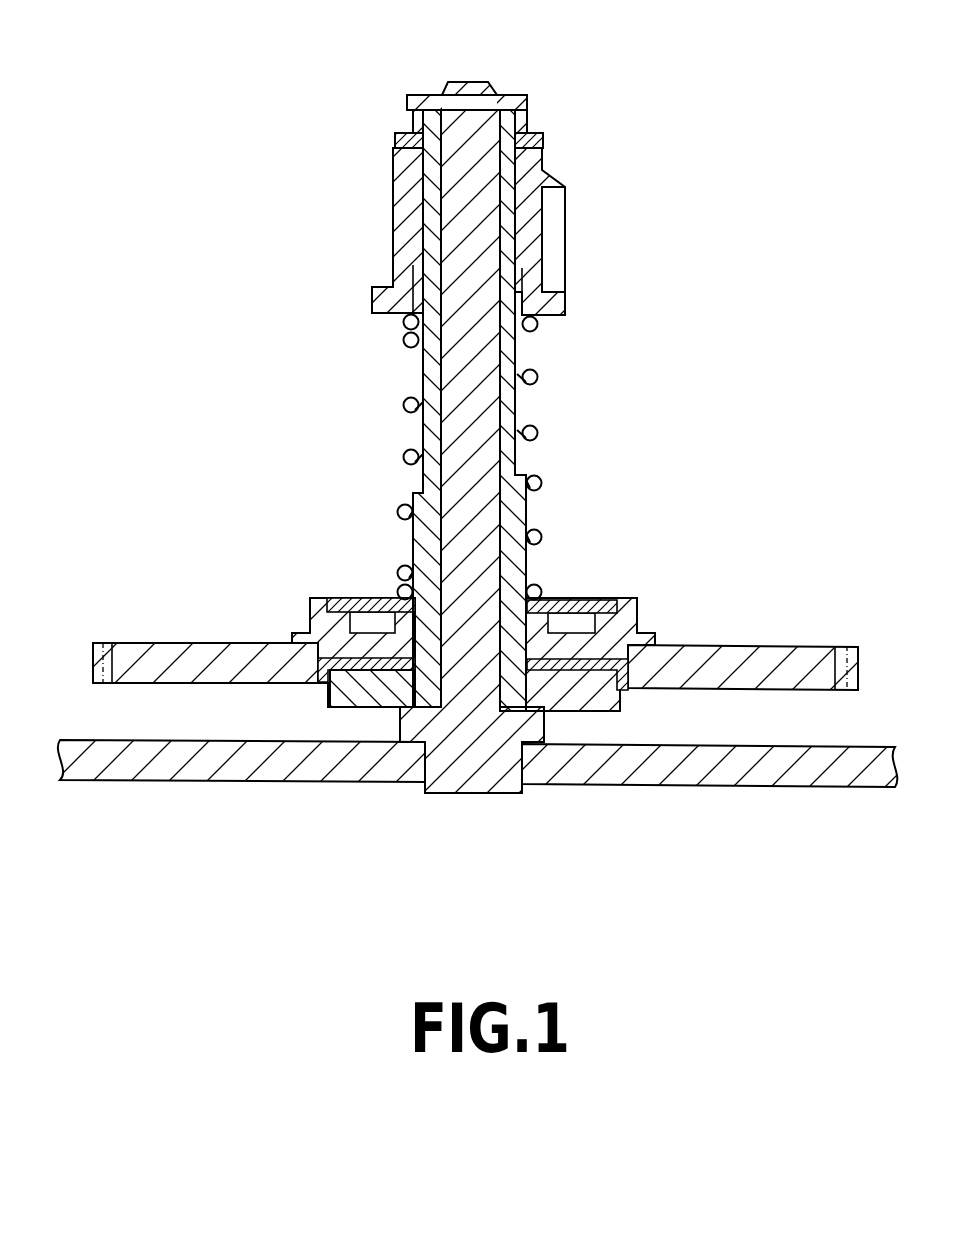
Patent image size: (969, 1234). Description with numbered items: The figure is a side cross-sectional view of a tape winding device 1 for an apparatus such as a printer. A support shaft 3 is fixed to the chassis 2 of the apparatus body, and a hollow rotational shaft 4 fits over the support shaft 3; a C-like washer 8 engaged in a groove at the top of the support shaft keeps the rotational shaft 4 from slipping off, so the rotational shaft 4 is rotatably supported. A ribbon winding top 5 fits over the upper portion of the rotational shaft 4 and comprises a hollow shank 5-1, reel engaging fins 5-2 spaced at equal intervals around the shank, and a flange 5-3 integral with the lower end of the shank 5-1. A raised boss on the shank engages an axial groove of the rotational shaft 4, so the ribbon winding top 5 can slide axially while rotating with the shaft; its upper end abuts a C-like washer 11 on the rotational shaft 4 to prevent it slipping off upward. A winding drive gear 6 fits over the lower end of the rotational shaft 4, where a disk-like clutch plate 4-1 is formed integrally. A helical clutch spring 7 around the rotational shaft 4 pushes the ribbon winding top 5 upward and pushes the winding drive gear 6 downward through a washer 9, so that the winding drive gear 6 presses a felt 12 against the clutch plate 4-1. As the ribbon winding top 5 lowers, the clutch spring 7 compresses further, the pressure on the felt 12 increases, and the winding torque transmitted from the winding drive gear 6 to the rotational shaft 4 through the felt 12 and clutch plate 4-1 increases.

The tape winding device 1 is at (345, 110).
The chassis 2 is at (217, 765).
The support shaft 3 is at (457, 388).
The rotational shaft 4 is at (528, 355).
The clutch plate 4-1 is at (368, 695).
The ribbon winding top 5 is at (466, 212).
The shank 5-1 is at (393, 223).
The reel engaging fin 5-2 is at (567, 213).
The flange 5-3 is at (552, 308).
The winding drive gear 6 is at (742, 647).
The clutch spring 7 is at (530, 432).
The C-like washer 8 is at (530, 100).
The washer 9 is at (572, 600).
The C-like washer 11 is at (543, 132).
The felt 12 is at (345, 658).